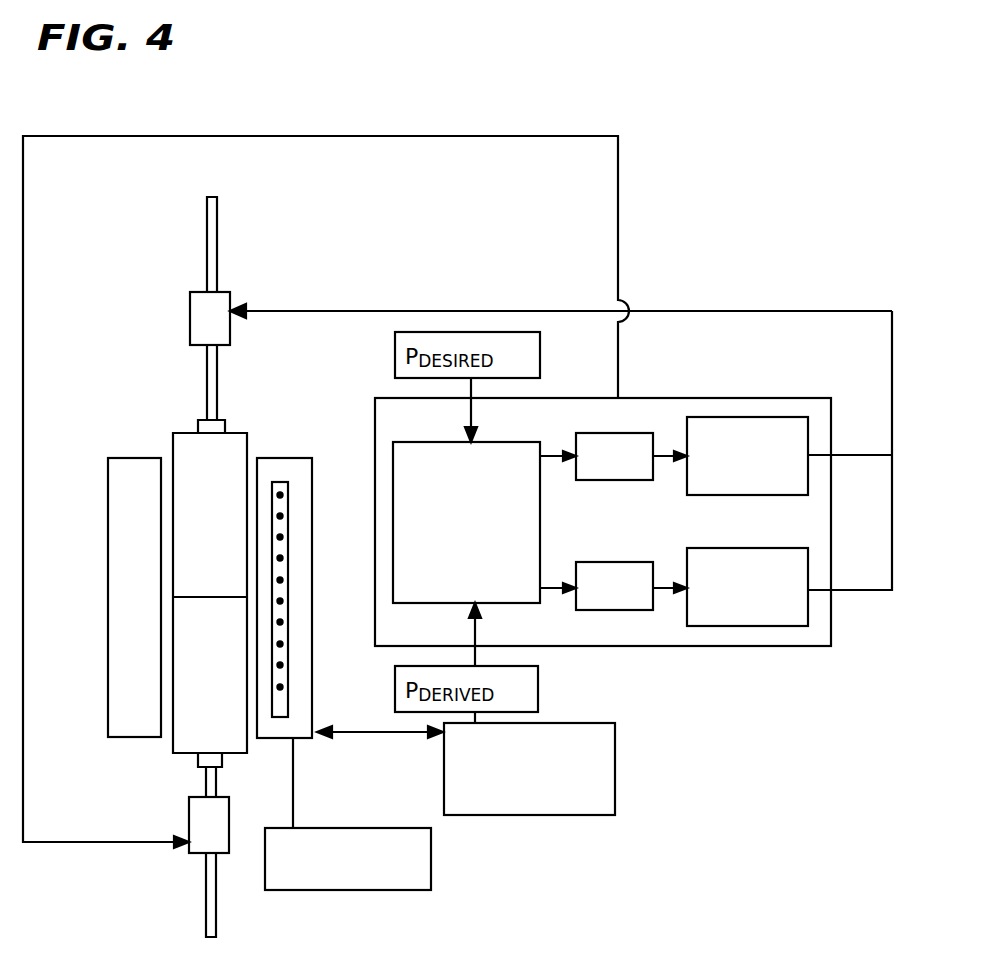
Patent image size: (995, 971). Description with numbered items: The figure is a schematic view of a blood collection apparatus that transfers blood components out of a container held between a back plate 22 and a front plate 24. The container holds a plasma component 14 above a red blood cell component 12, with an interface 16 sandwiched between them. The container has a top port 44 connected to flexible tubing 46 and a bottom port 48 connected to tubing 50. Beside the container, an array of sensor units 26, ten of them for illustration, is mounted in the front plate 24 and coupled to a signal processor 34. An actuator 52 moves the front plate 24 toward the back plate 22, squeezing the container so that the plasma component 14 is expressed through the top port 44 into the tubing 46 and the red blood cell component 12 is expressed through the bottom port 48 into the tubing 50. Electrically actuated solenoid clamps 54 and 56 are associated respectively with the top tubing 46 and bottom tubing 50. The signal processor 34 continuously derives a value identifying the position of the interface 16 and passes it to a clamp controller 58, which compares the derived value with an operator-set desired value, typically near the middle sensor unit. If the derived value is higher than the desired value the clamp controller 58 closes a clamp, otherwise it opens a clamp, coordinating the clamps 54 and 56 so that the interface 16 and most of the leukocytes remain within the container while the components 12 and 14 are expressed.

The red blood cell component 12 is at (200, 713).
The plasma component 14 is at (200, 470).
The interface 16 is at (192, 597).
The back plate 22 is at (128, 500).
The front plate 24 is at (285, 468).
The sensor units 26 is at (298, 573).
The signal processor 34 is at (553, 822).
The top port 44 is at (230, 417).
The flexible tubing 46 is at (213, 242).
The bottom port 48 is at (223, 760).
The tubing 50 is at (212, 918).
The actuator 52 is at (393, 878).
The solenoid clamp 54 is at (220, 300).
The solenoid clamp 56 is at (207, 833).
The clamp controller 58 is at (681, 655).